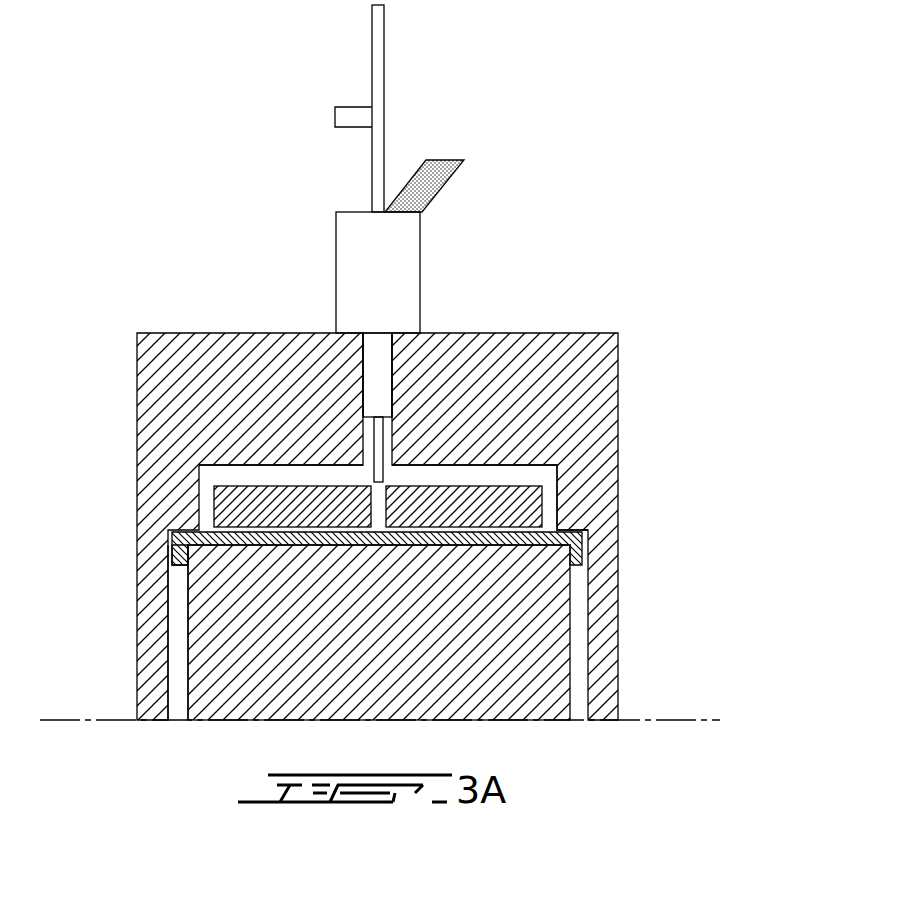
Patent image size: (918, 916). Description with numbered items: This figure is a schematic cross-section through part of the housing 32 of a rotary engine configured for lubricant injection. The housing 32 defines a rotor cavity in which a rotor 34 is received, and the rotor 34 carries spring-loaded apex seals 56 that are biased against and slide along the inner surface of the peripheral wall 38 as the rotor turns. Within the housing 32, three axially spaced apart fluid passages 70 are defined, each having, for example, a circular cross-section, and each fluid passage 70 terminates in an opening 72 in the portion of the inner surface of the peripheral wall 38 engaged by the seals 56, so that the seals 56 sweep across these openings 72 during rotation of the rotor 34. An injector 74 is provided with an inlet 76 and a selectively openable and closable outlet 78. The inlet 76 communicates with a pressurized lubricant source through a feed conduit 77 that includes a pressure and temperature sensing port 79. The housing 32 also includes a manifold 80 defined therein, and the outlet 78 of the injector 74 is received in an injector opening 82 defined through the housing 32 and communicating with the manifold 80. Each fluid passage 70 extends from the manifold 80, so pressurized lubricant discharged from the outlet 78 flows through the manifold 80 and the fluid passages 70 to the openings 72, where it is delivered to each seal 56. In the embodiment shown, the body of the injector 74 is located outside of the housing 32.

The housing 32 is at (137, 333).
The rotor 34 is at (555, 636).
The peripheral wall 38 is at (271, 540).
The apex seal 56 is at (578, 552).
The fluid passage 70 is at (213, 500).
The opening 72 is at (205, 528).
The injector 74 is at (420, 272).
The inlet 76 is at (376, 213).
The feed conduit 77 is at (385, 52).
The outlet 78 is at (378, 401).
The pressure and temperature sensing port 79 is at (335, 117).
The manifold 80 is at (537, 474).
The injector opening 82 is at (365, 370).